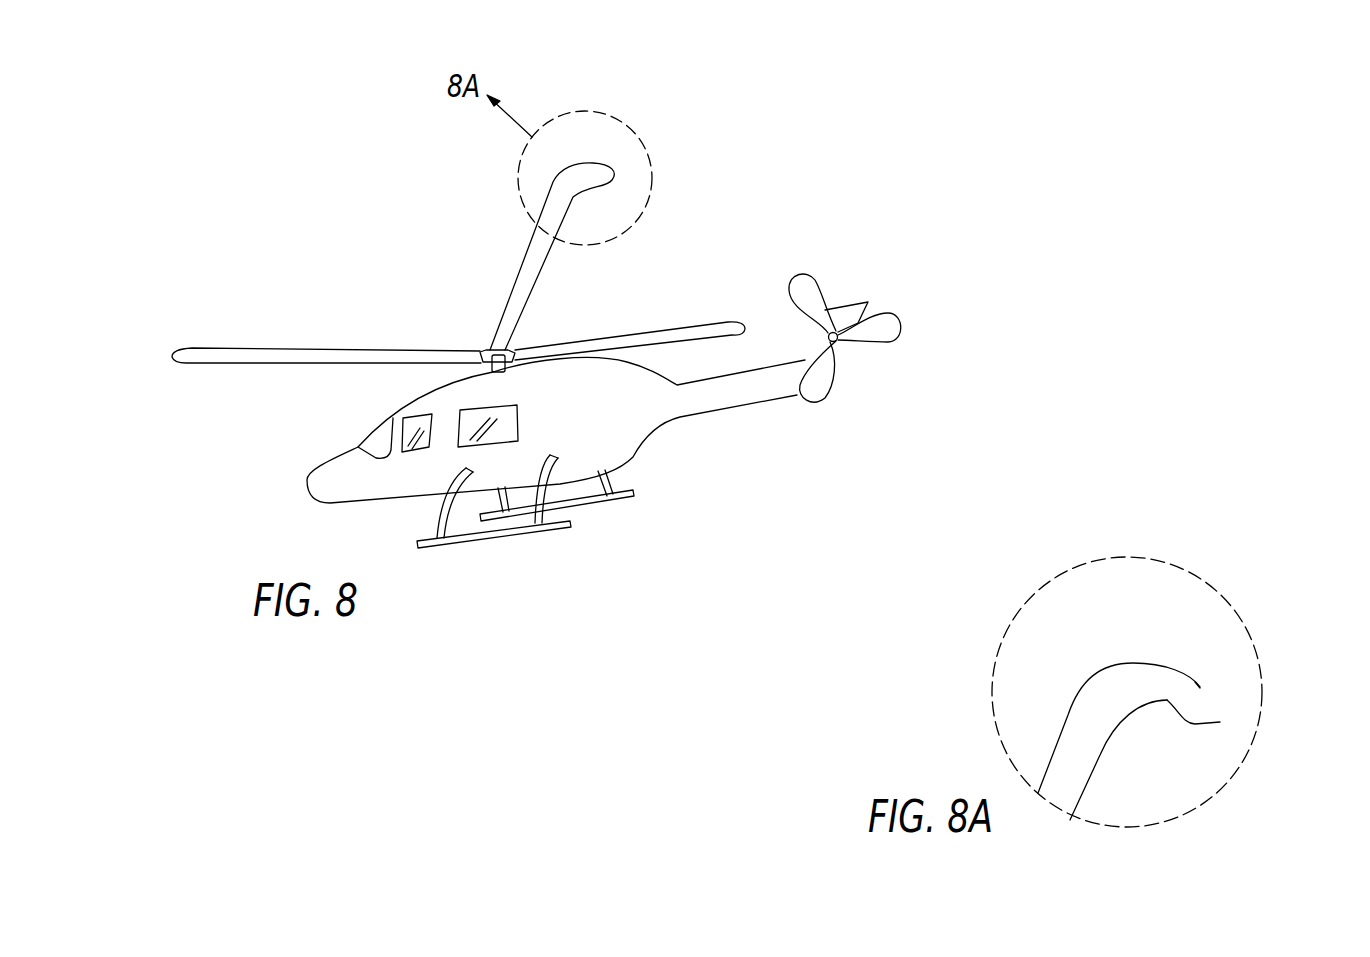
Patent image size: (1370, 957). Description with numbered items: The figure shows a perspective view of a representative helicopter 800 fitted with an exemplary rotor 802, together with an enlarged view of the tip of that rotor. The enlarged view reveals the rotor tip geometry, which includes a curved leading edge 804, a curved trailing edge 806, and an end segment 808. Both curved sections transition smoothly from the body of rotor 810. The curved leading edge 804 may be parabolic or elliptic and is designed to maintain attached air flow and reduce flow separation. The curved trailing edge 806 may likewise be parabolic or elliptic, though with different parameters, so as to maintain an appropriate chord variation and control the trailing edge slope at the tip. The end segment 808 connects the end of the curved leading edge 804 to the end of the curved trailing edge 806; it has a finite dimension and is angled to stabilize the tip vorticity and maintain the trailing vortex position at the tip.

In FIG. 8, the helicopter 800 is at (333, 427).
In FIG. 8, the rotor 802 is at (494, 187).
In FIG. 8A, the curved leading edge 804 is at (1147, 663).
In FIG. 8A, the curved trailing edge 806 is at (1220, 722).
In FIG. 8A, the end segment 808 is at (1200, 688).
In FIG. 8A, the body of rotor 810 is at (1078, 752).